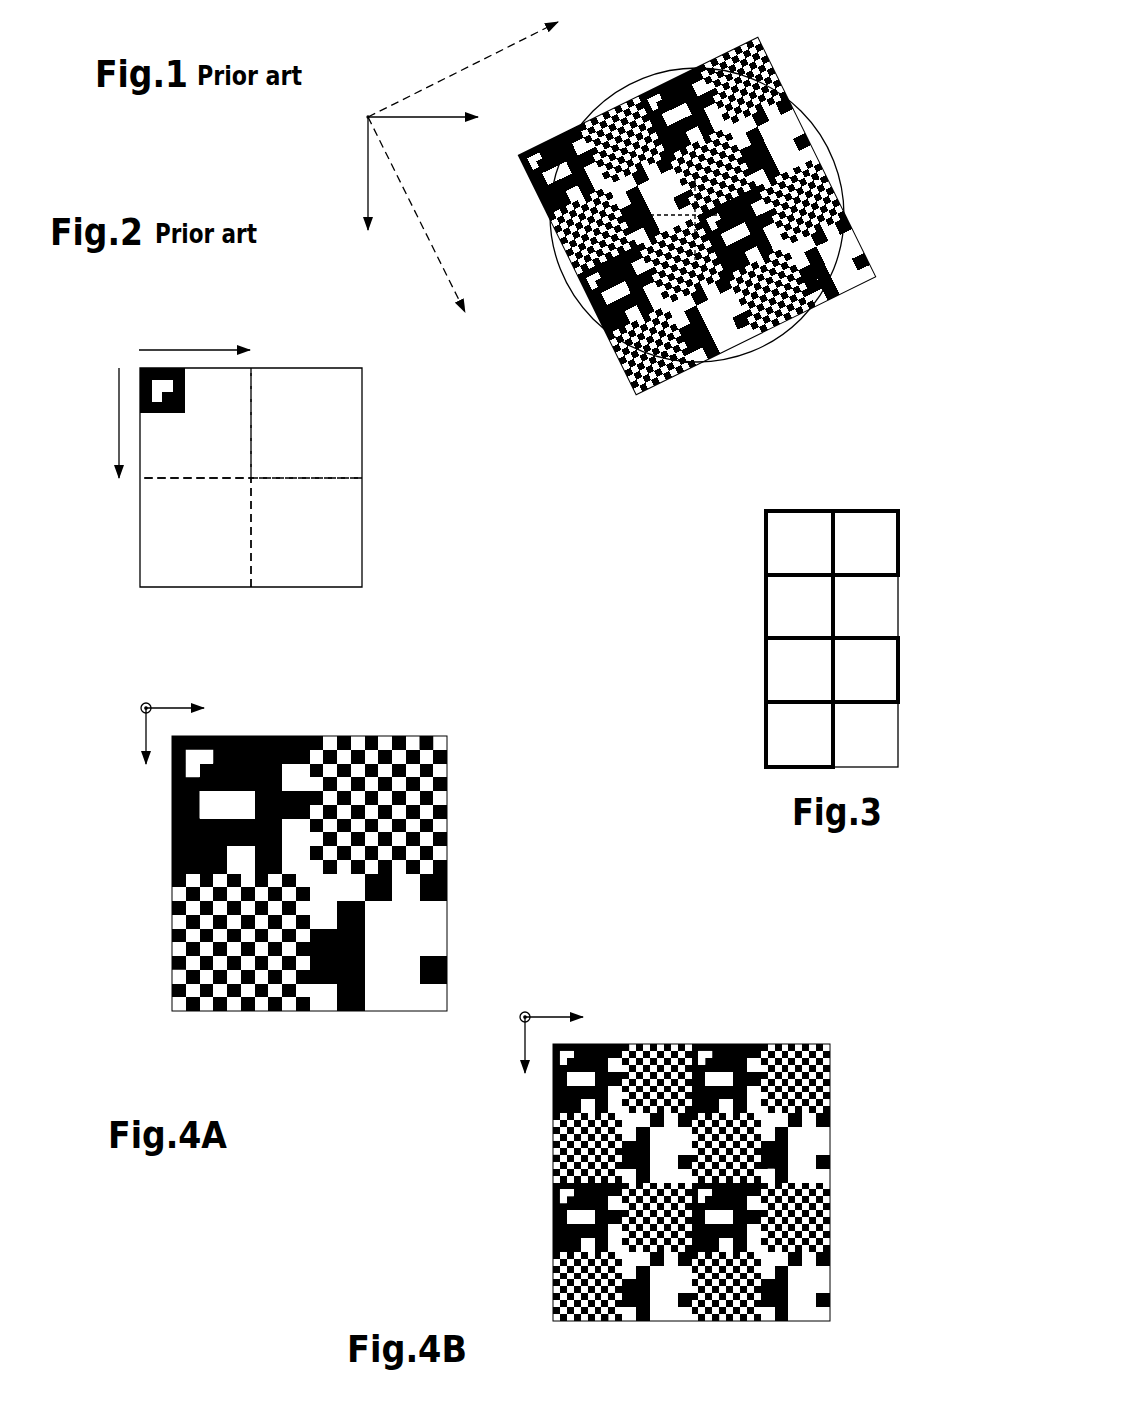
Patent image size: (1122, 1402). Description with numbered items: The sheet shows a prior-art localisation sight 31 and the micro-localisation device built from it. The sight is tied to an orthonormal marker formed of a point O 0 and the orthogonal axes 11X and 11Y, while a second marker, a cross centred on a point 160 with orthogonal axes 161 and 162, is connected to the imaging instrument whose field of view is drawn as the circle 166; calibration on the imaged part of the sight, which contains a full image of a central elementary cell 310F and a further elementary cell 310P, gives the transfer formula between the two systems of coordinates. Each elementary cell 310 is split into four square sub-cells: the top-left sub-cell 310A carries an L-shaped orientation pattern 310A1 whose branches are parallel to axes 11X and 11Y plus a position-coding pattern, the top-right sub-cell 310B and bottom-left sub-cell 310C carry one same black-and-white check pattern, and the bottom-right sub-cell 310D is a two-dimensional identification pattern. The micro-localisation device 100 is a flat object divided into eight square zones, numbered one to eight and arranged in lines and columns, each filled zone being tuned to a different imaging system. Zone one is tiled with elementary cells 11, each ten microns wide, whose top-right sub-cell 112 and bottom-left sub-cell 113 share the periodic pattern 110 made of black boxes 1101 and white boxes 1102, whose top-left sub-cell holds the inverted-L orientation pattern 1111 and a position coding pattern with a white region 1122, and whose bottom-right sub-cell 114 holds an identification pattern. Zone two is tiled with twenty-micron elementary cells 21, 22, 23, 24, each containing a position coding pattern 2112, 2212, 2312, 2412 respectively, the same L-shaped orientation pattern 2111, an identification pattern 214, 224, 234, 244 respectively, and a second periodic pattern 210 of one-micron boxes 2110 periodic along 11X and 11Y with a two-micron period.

In FIG. 1, the point O 0 is at (357, 112).
In FIG. 4A, the point O 0 is at (134, 696).
In FIG. 4B, the point O 0 is at (514, 1012).
In FIG. 4A, the elementary cell 11 is at (316, 1032).
In FIG. 1, the axis 11X is at (453, 77).
In FIG. 2, the axis 11X is at (203, 350).
In FIG. 4A, the axis 11X is at (147, 703).
In FIG. 4B, the axis 11X is at (547, 1012).
In FIG. 1, the axis 11Y is at (416, 222).
In FIG. 2, the axis 11Y is at (118, 417).
In FIG. 4A, the axis 11Y is at (145, 732).
In FIG. 4B, the axis 11Y is at (521, 1040).
In FIG. 4B, the elementary cell 21 is at (622, 1113).
In FIG. 4B, the elementary cell 22 is at (761, 1113).
In FIG. 4B, the elementary cell 23 is at (622, 1252).
In FIG. 4B, the elementary cell 24 is at (761, 1252).
In FIG. 1, the localisation sight 31 is at (527, 140).
In FIG. 3, the micro-localisation device 100 is at (745, 578).
In FIG. 4A, the periodic pattern 110 is at (324, 880).
In FIG. 4A, the sub-cell 112 is at (379, 805).
In FIG. 4A, the sub-cell 113 is at (241, 943).
In FIG. 4A, the sub-cell 114 is at (379, 943).
In FIG. 1, the point 160 is at (730, 213).
In FIG. 1, the axis 161 is at (423, 120).
In FIG. 1, the axis 162 is at (366, 192).
In FIG. 1, the circle 166 is at (783, 330).
In FIG. 4B, the second periodic pattern 210 is at (691, 1182).
In FIG. 4B, the identification pattern 214 is at (556, 1144).
In FIG. 4B, the identification pattern 224 is at (802, 1134).
In FIG. 4B, the identification pattern 234 is at (671, 1314).
In FIG. 4B, the identification pattern 244 is at (809, 1314).
In FIG. 2, the elementary cell 310 is at (261, 474).
In FIG. 2, the sub-cell 310A is at (252, 385).
In FIG. 2, the orientation pattern 310A1 is at (160, 370).
In FIG. 2, the sub-cell 310B is at (350, 415).
In FIG. 2, the sub-cell 310C is at (152, 517).
In FIG. 2, the sub-cell 310D is at (283, 588).
In FIG. 1, the central elementary cell 310F is at (663, 207).
In FIG. 1, the elementary cell 310P is at (817, 178).
In FIG. 4A, the black box 1101 is at (302, 825).
In FIG. 4A, the white box 1102 is at (309, 887).
In FIG. 4A, the orientation pattern 1111 is at (200, 764).
In FIG. 4A, the white rectangle 1122 is at (227, 805).
In FIG. 4B, the cell 2110 is at (771, 1172).
In FIG. 4B, the orientation pattern 2111 is at (636, 1127).
In FIG. 4B, the position coding pattern 2112 is at (602, 1051).
In FIG. 4B, the position coding pattern 2212 is at (733, 1047).
In FIG. 4B, the position coding pattern 2312 is at (560, 1220).
In FIG. 4B, the position coding pattern 2412 is at (715, 1317).